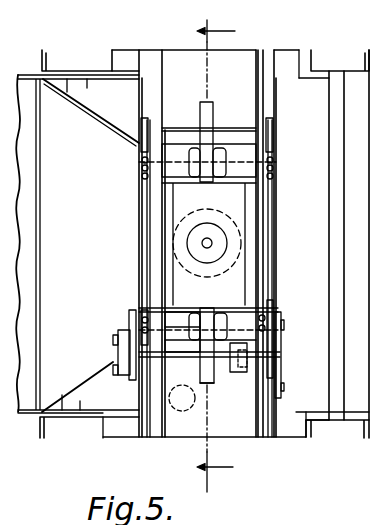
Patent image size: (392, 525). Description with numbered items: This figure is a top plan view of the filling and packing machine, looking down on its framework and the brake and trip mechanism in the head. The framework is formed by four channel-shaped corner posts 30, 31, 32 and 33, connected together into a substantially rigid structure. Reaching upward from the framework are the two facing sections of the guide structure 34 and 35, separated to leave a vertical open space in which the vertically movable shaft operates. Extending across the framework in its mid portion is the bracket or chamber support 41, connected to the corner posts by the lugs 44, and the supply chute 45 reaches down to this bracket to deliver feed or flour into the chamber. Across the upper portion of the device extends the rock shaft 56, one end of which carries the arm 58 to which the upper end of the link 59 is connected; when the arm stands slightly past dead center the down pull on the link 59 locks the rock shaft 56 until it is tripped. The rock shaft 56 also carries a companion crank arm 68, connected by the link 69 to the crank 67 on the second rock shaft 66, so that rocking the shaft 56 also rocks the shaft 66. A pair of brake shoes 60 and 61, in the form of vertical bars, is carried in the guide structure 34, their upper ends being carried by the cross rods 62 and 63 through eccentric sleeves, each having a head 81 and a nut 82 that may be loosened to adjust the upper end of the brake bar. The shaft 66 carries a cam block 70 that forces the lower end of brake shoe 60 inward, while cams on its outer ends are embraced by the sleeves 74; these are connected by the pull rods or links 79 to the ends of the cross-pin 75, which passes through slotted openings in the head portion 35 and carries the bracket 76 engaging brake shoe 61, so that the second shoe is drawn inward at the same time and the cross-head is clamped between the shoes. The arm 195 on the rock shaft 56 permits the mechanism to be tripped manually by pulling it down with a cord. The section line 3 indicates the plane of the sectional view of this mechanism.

The section line 3- 3 is at (216, 252).
The corner post 30 is at (323, 423).
The corner post 31 is at (354, 72).
The corner post 32 is at (64, 68).
The corner post 33 is at (67, 422).
The guide structure section 34 is at (251, 418).
The guide structure section 35 is at (256, 71).
The bracket or chamber support 41 is at (118, 107).
The lug 44 is at (297, 425).
The supply chute 45 is at (57, 243).
The rock shaft 56 is at (182, 398).
The arm 58 is at (129, 313).
The link 59 is at (117, 372).
The brake shoe 60 is at (210, 310).
The brake shoe 61 is at (209, 178).
The cross rod 62 is at (180, 322).
The cross rod 63 is at (150, 176).
The rock shaft 66 is at (182, 330).
The crank 67 is at (237, 372).
The companion crank arm 68 is at (230, 336).
The link 69 is at (228, 373).
The cam block 70 is at (204, 384).
The sleeve 74 is at (268, 373).
The cross-pin 75 is at (235, 133).
The bracket 76 is at (200, 111).
The pull rod or link 79 is at (270, 233).
The head 81 is at (222, 313).
The nut 82 is at (193, 313).
The arm 195 is at (282, 360).